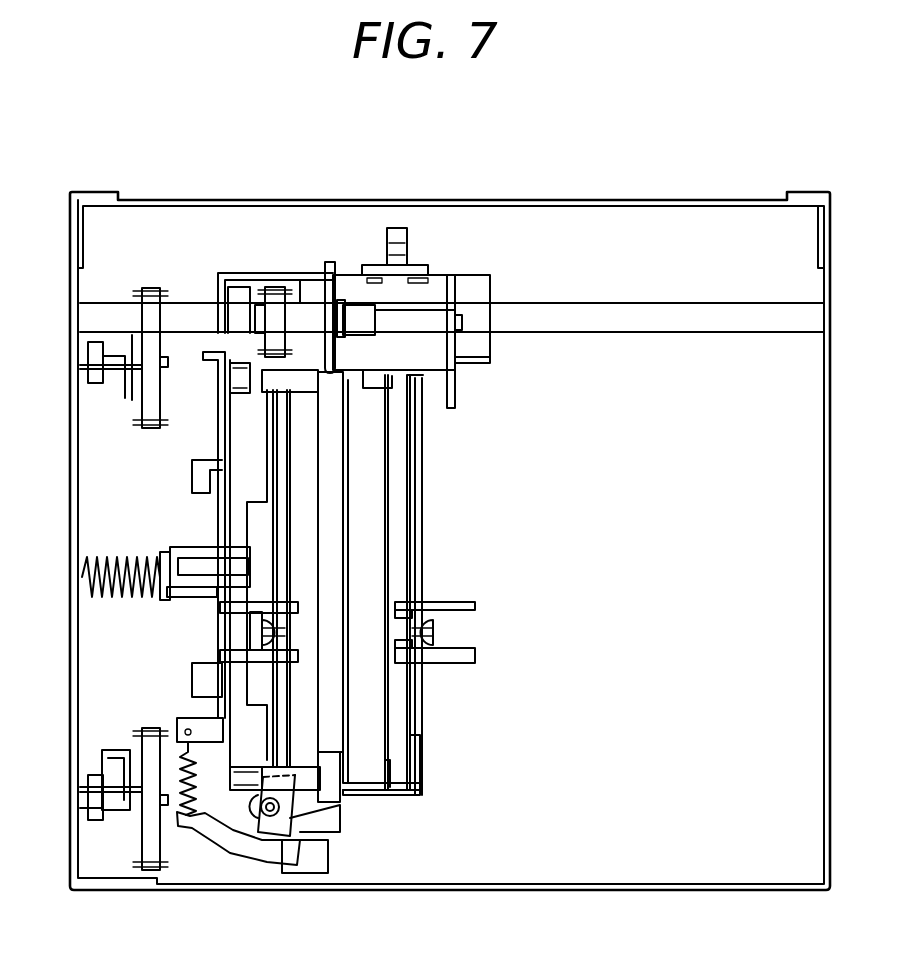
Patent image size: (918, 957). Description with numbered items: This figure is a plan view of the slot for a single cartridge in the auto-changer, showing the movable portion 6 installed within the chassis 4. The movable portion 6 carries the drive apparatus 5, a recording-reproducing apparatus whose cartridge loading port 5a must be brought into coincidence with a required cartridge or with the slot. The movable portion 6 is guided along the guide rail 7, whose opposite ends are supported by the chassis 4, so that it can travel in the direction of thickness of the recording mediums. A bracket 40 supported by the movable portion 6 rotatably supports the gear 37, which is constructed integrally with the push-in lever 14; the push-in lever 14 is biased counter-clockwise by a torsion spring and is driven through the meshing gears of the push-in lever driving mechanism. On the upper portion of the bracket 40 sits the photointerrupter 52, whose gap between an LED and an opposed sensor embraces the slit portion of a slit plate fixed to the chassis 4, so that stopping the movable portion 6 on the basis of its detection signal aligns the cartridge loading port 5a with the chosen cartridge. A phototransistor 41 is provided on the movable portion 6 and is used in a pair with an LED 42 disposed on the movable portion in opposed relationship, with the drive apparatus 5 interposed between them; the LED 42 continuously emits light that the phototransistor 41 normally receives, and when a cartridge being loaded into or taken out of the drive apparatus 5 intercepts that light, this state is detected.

The chassis 4 is at (655, 890).
The drive apparatus 5 is at (377, 487).
The cartridge loading port 5a is at (335, 692).
The movable portion 6 is at (400, 795).
The guide rail 7 is at (670, 312).
The push-in lever 14 is at (330, 262).
The gear 37 is at (275, 302).
The bracket 40 is at (235, 277).
The phototransistor 41 is at (260, 645).
The LED 42 is at (433, 645).
The photointerrupter 52 is at (397, 232).